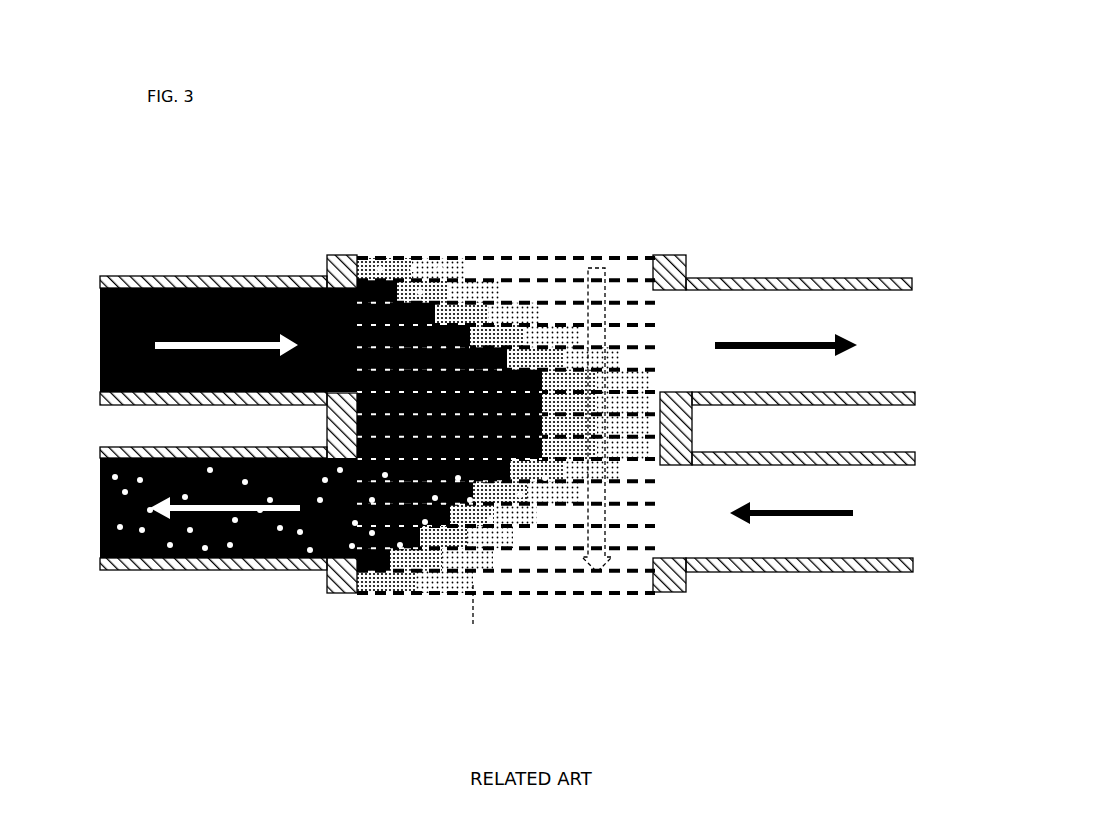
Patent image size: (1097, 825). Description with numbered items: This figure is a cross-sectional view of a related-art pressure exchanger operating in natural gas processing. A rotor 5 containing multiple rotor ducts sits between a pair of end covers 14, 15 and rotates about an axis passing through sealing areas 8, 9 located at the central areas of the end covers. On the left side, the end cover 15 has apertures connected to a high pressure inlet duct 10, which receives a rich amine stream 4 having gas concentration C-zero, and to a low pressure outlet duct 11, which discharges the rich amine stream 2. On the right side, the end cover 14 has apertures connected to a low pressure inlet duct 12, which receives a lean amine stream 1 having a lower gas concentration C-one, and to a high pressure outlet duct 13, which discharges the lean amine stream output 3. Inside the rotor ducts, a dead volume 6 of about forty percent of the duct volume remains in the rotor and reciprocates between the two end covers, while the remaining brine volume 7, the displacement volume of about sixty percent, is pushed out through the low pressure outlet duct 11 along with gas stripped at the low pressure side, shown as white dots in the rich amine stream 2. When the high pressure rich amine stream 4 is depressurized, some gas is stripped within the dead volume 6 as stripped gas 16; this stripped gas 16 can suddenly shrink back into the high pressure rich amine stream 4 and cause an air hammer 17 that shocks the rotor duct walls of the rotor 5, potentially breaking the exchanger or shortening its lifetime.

The lean amine stream 1 is at (888, 525).
The rich amine stream 2 is at (98, 508).
The lean amine stream output 3 is at (900, 345).
The rich amine stream 4 is at (99, 343).
The rotor 5 is at (530, 258).
The dead volume 6 is at (432, 568).
The brine volume 7 is at (612, 578).
The sealing area 8 is at (327, 440).
The sealing area 9 is at (693, 440).
The high pressure inlet duct 10 is at (232, 276).
The low pressure outlet duct 11 is at (200, 570).
The low pressure inlet duct 12 is at (785, 565).
The high pressure outlet duct 13 is at (783, 278).
The end cover 14 is at (686, 270).
The end cover 15 is at (358, 262).
The stripped gas 16 is at (410, 262).
The air hammer 17 is at (463, 262).